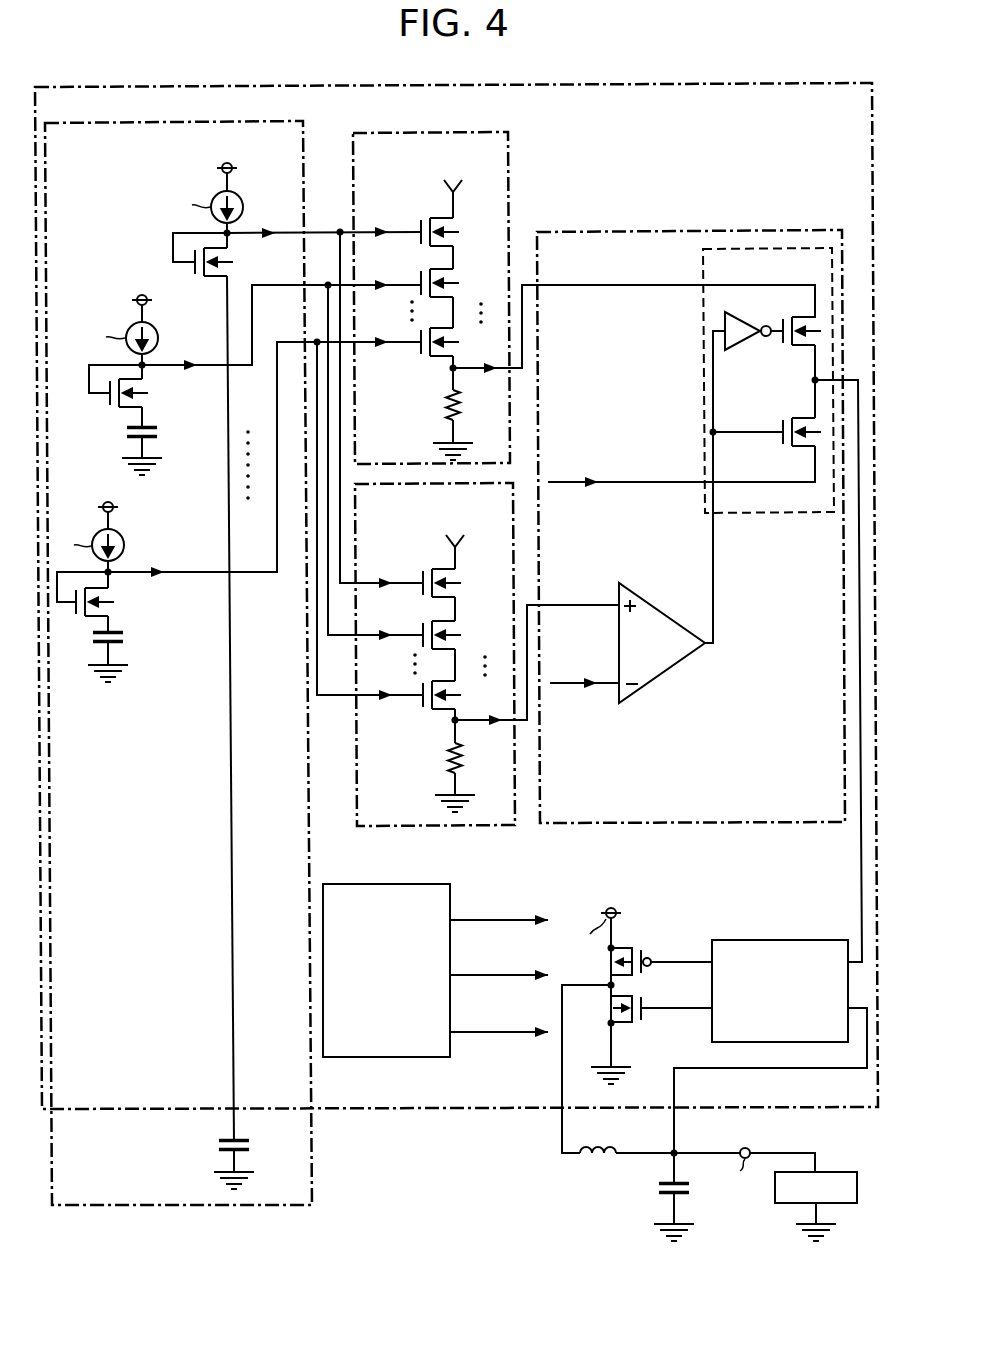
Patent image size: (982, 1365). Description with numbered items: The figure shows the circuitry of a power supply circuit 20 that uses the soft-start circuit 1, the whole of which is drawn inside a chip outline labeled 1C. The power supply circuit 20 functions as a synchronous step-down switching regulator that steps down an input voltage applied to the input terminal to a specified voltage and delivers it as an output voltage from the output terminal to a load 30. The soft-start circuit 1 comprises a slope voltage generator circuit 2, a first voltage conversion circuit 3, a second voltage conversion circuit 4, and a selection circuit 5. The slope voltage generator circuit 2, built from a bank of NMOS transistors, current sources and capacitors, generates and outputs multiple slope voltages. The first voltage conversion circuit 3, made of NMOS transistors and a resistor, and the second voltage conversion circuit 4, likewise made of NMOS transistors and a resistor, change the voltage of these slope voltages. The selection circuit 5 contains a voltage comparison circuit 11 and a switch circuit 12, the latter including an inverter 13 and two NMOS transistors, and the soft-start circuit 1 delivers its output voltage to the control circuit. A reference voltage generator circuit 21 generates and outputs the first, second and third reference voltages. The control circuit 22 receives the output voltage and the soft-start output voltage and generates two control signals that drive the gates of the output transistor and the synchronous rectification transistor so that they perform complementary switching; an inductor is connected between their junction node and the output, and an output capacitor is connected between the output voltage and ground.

The power supply circuit 20 is at (804, 45).
The semiconductor integrated circuit chip 1C is at (743, 76).
The soft-start circuit 1 is at (804, 151).
The slope voltage generator circuit 2 is at (97, 1222).
The first voltage conversion circuit 3 is at (517, 169).
The second voltage conversion circuit 4 is at (397, 839).
The selection circuit 5 is at (751, 223).
The voltage comparison circuit 11 is at (653, 603).
The switch circuit 12 is at (694, 355).
The inverter 13 is at (738, 348).
The reference voltage generator circuit 21 is at (427, 1060).
The control circuit 22 is at (821, 939).
The load 30 is at (833, 1171).